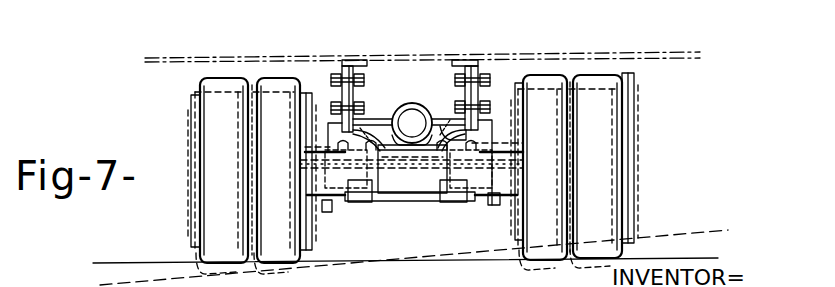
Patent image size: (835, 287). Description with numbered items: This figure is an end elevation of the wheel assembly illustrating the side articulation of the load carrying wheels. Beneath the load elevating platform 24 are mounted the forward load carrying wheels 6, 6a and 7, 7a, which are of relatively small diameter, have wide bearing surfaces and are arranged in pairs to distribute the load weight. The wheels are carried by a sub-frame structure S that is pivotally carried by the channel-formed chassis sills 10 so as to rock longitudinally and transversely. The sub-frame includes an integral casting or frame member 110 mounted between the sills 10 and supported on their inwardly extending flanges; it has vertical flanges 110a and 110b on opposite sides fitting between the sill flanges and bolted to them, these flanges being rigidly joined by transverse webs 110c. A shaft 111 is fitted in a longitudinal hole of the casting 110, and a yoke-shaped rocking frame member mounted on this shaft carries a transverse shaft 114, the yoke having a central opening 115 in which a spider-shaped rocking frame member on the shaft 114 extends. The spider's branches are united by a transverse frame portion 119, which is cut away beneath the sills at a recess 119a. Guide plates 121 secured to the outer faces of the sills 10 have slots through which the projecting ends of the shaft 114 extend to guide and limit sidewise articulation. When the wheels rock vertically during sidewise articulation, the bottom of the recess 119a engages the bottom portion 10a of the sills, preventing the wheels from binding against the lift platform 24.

The load elevating platform 24 is at (231, 64).
The forward load carrying wheel 6 is at (212, 202).
The forward load carrying wheel 6a is at (270, 220).
The forward load carrying wheel 7 is at (605, 222).
The forward load carrying wheel 7a is at (553, 200).
The chassis sill 10 is at (347, 63).
The bottom portion of sill 10a is at (337, 152).
The guide plate 121 is at (340, 100).
The frame member 110 is at (373, 112).
The vertical flange 110a is at (363, 113).
The vertical flange 110b is at (457, 76).
The transverse web 110c is at (447, 112).
The shaft 111 is at (410, 120).
The transverse shaft 114 is at (512, 175).
The central opening 115 is at (376, 163).
The transverse frame portion 119 is at (423, 178).
The recess 119a is at (356, 165).
The sub-frame structure S is at (440, 196).